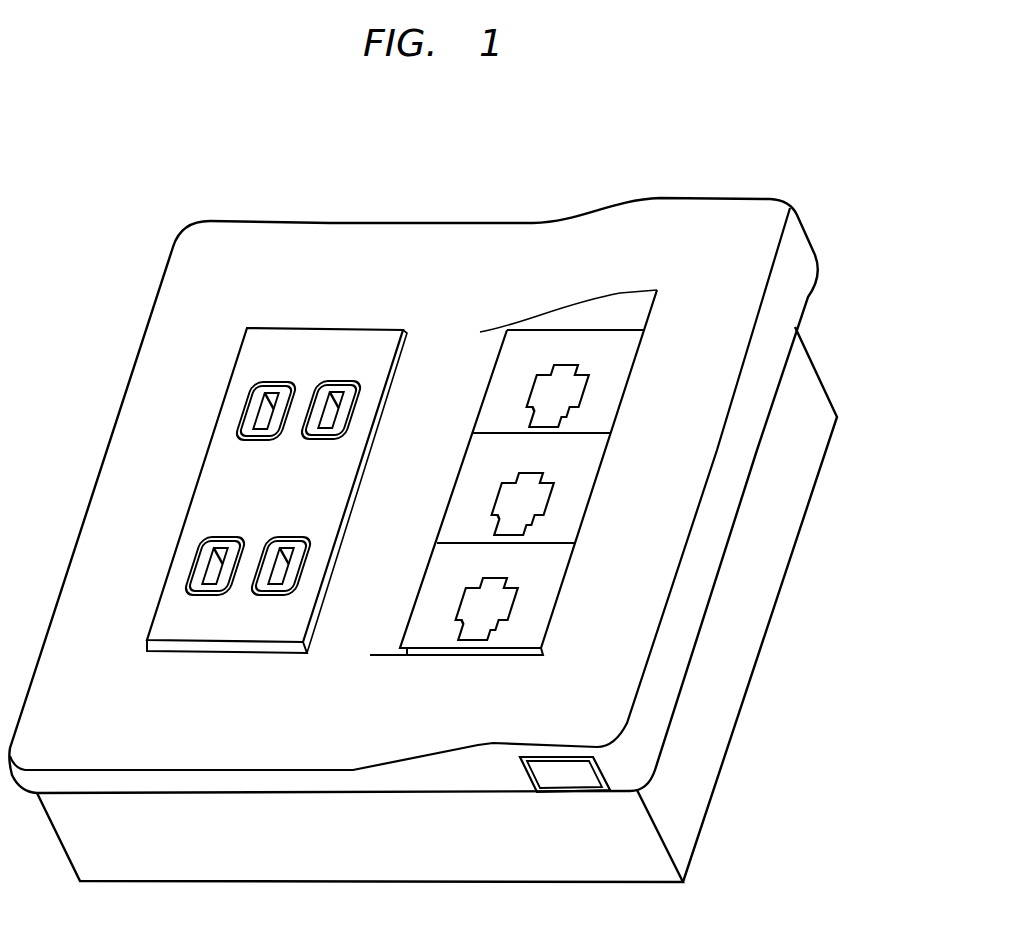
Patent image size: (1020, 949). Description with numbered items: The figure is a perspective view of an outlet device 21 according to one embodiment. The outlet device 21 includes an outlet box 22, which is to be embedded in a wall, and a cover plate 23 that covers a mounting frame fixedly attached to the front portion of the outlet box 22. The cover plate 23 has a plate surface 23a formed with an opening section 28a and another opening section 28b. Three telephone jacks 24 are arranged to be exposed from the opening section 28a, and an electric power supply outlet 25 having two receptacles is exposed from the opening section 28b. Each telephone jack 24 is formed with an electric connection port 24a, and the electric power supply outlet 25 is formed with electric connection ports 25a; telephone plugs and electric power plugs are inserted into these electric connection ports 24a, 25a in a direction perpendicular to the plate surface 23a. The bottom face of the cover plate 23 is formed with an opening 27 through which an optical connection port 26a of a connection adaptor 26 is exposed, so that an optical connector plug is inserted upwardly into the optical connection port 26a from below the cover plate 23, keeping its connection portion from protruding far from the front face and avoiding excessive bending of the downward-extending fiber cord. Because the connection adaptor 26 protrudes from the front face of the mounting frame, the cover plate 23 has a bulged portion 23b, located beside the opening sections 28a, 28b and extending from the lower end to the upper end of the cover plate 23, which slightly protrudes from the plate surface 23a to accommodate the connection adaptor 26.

The outlet device 21 is at (661, 195).
The outlet box 22 is at (750, 605).
The cover plate 23 is at (787, 293).
The plate surface 23a is at (363, 257).
The bulged portion 23b is at (623, 675).
The telephone jack 24 is at (503, 393).
The electric connection port 24a is at (563, 385).
The electric power supply outlet 25 is at (312, 353).
The electric connection port 25a is at (257, 412).
The connection adaptor 26 is at (537, 790).
The optical connection port 26a is at (567, 770).
The opening 27 is at (520, 767).
The opening section 28a is at (443, 520).
The opening section 28b is at (200, 653).